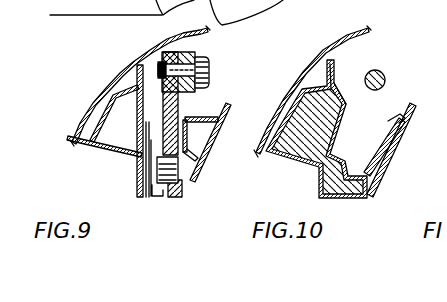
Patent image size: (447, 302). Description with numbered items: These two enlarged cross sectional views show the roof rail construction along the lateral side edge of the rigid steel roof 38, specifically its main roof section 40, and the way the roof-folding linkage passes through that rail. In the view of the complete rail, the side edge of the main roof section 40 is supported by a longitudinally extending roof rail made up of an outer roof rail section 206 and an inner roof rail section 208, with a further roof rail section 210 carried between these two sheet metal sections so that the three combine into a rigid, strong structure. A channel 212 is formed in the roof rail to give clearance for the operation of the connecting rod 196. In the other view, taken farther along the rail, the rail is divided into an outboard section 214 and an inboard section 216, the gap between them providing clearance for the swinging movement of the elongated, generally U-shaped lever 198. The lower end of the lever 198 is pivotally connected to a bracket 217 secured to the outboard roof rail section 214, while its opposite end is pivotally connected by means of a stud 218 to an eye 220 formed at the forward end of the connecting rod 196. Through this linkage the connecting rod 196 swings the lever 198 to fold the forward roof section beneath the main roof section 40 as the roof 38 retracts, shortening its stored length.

In FIG. 9, the roof 38 is at (106, 83).
In FIG. 9, the main roof section 40 is at (128, 62).
In FIG. 10, the main roof section 40 is at (326, 50).
In FIG. 10, the connecting link 196 is at (383, 69).
In FIG. 9, the elongated U-shaped lever 198 is at (178, 100).
In FIG. 10, the outer roof rail section 206 is at (292, 160).
In FIG. 10, the inner roof rail section 208 is at (347, 104).
In FIG. 10, the roof rail section 210 is at (368, 177).
In FIG. 10, the channel 212 is at (405, 133).
In FIG. 9, the outboard section 214 is at (127, 158).
In FIG. 9, the inboard section 216 is at (213, 129).
In FIG. 9, the bracket 217 is at (134, 179).
In FIG. 9, the stud 218 is at (201, 72).
In FIG. 9, the eye 220 is at (190, 53).